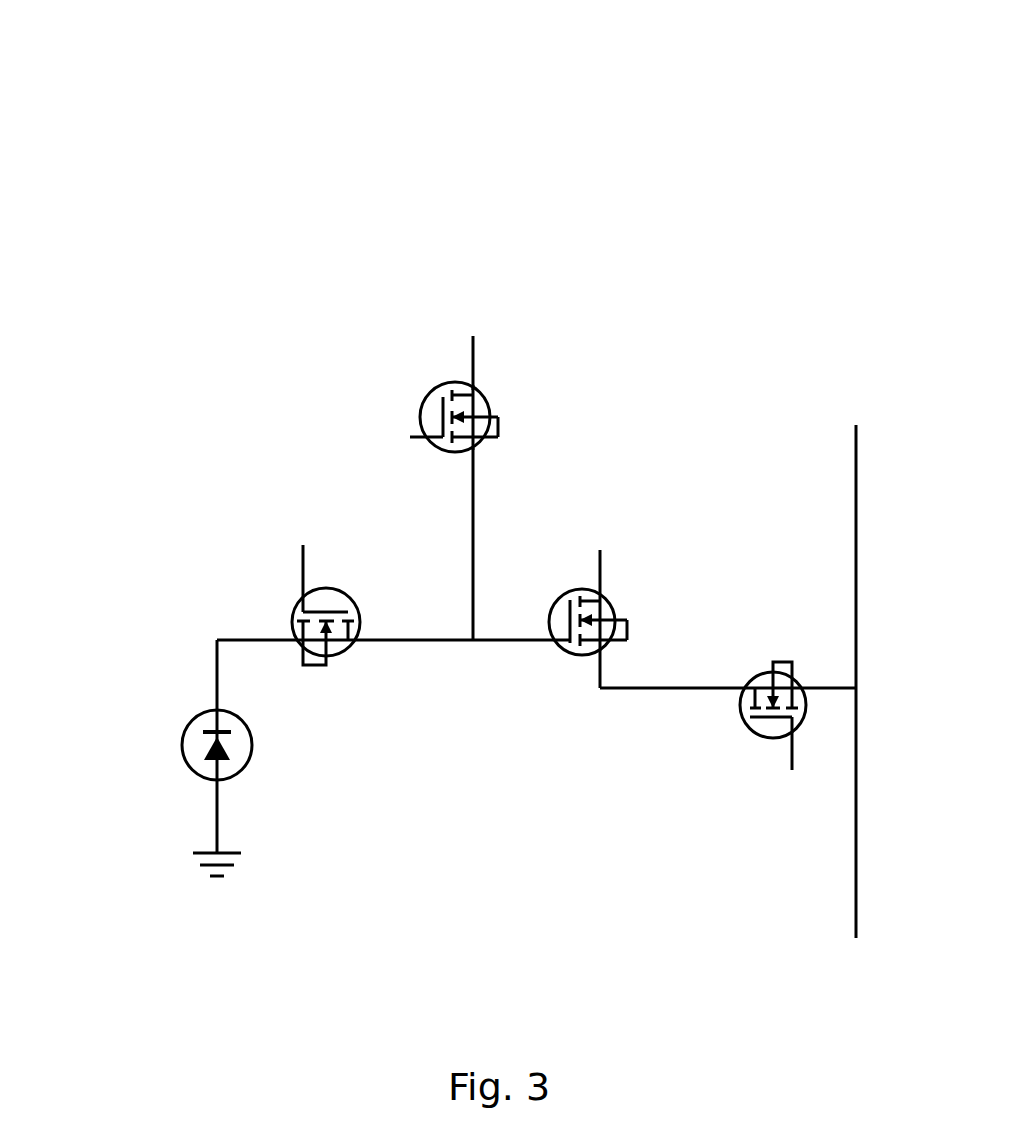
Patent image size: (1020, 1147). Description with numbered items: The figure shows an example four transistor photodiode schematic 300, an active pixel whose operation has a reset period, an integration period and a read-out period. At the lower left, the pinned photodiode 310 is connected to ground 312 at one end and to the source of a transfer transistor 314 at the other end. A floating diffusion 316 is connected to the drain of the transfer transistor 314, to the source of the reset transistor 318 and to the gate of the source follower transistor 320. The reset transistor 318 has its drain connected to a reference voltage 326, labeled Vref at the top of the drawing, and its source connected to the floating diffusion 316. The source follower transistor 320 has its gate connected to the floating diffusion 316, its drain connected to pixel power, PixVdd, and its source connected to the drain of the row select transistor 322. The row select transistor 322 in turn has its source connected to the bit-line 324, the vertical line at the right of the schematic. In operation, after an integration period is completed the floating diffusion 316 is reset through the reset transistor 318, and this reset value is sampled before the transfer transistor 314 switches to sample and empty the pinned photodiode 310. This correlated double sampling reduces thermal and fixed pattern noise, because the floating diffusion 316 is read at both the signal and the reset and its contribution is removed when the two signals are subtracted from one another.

The pixel circuit 300 is at (376, 72).
The pinned photodiode 310 is at (154, 746).
The ground 312 is at (249, 851).
The transfer transistor 314 is at (308, 574).
The floating diffusion 316 is at (393, 573).
The reset transistor 318 is at (419, 407).
The source follower transistor 320 is at (683, 609).
The row select transistor 322 is at (764, 741).
The bit-line 324 is at (881, 665).
The reference voltage 326 is at (502, 348).